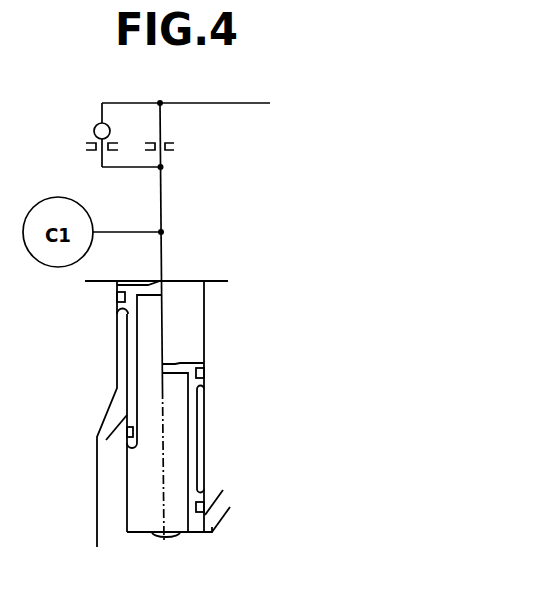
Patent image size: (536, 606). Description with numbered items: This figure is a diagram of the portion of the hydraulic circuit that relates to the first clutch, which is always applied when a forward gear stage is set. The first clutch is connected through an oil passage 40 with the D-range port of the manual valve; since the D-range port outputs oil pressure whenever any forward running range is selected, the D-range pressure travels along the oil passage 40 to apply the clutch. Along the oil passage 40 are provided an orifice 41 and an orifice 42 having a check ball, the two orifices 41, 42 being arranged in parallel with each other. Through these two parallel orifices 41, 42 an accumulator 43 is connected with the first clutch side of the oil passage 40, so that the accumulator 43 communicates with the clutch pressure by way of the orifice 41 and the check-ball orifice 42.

The oil passage 40 is at (163, 200).
The orifice 41 is at (165, 144).
The orifice having a check ball 42 is at (93, 135).
The accumulator 43 is at (117, 357).